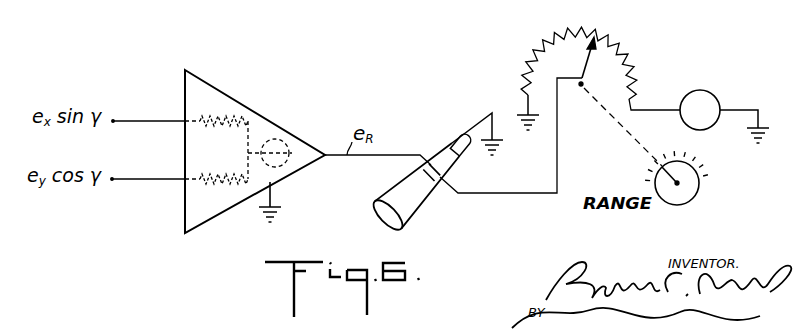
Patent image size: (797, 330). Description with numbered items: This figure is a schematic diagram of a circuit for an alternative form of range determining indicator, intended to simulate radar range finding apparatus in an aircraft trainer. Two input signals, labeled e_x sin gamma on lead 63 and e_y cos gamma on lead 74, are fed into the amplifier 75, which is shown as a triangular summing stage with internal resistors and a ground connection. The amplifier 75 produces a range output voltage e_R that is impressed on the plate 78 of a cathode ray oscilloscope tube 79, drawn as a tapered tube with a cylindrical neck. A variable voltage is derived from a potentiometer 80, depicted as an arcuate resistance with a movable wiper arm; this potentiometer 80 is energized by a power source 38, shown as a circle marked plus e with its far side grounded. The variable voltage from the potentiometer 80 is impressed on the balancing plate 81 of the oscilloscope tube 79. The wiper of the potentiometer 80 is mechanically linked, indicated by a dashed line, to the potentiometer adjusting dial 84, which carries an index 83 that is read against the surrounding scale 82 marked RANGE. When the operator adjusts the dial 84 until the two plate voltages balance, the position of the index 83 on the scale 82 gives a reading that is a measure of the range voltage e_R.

The ex sin γ input lead 63 is at (113, 121).
The ey cos γ input lead 74 is at (112, 179).
The amplifier 75 is at (258, 114).
The plate 78 is at (430, 162).
The cathode ray oscilloscope tube 79 is at (410, 205).
The balancing plate 81 is at (445, 173).
The potentiometer 80 is at (606, 36).
The power source 38 is at (710, 91).
The scale 82 is at (700, 164).
The index 83 is at (685, 163).
The potentiometer adjusting dial 84 is at (685, 201).